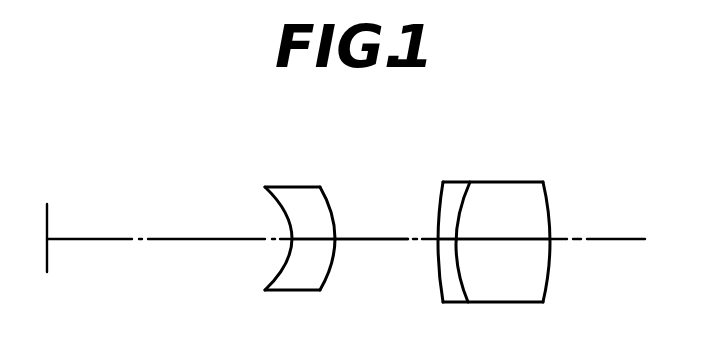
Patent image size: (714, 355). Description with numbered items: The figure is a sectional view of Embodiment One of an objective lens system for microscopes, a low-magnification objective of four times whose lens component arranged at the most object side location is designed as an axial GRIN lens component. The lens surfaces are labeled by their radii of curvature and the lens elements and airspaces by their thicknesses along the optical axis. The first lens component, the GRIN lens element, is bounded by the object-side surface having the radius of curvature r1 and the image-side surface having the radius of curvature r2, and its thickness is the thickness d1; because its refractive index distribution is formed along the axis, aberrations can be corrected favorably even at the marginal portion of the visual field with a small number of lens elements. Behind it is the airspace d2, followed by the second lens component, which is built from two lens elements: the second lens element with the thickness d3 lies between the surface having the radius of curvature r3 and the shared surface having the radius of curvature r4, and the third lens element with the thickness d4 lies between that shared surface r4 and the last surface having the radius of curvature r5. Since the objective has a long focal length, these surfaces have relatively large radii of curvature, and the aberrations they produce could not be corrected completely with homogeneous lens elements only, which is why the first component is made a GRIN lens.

The radius of curvature of the first lens surface r1 is at (284, 210).
The radius of curvature of the second lens surface r2 is at (331, 208).
The radius of curvature of the third lens surface r3 is at (438, 210).
The radius of curvature of the fourth lens surface r4 is at (460, 208).
The radius of curvature of the fifth lens surface r5 is at (548, 203).
The thickness of the first lens element d1 is at (312, 242).
The airspace between the first and second lens elements d2 is at (371, 243).
The thickness of the second lens element d3 is at (448, 243).
The thickness of the third lens element d4 is at (527, 243).